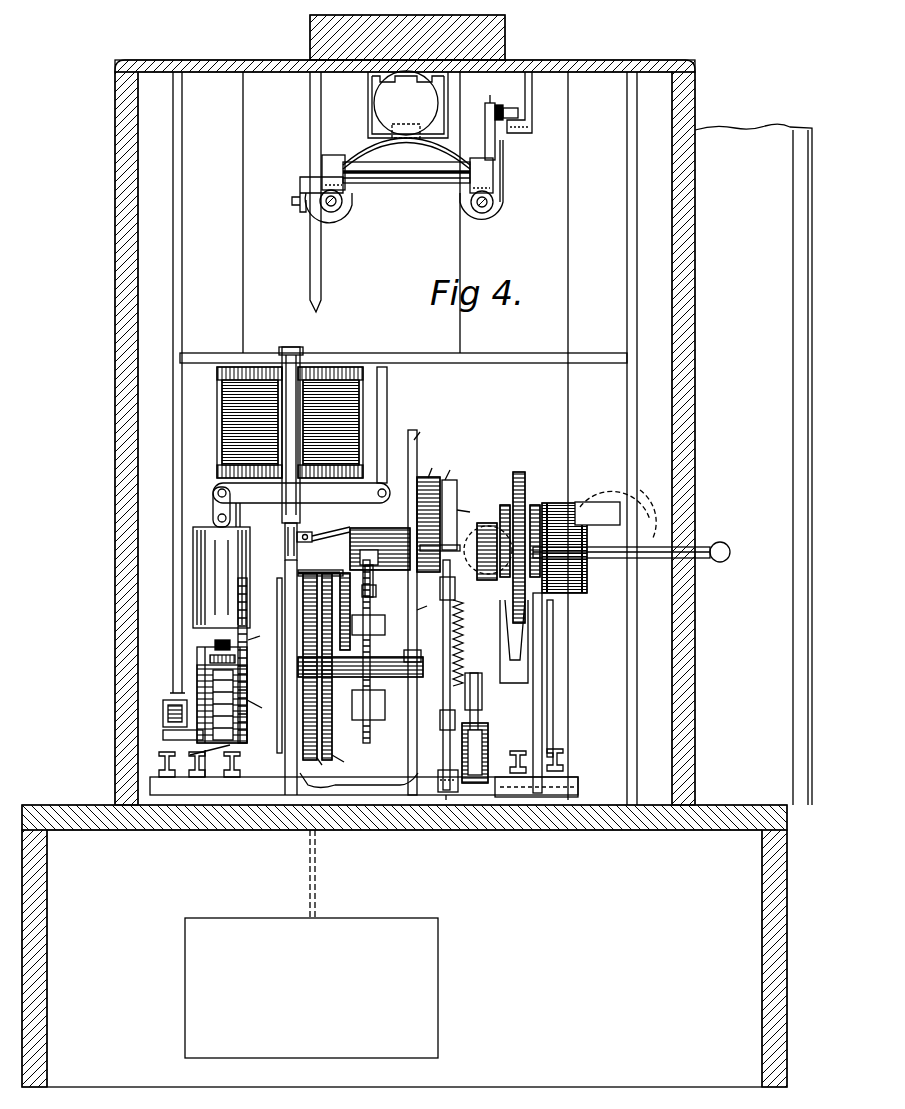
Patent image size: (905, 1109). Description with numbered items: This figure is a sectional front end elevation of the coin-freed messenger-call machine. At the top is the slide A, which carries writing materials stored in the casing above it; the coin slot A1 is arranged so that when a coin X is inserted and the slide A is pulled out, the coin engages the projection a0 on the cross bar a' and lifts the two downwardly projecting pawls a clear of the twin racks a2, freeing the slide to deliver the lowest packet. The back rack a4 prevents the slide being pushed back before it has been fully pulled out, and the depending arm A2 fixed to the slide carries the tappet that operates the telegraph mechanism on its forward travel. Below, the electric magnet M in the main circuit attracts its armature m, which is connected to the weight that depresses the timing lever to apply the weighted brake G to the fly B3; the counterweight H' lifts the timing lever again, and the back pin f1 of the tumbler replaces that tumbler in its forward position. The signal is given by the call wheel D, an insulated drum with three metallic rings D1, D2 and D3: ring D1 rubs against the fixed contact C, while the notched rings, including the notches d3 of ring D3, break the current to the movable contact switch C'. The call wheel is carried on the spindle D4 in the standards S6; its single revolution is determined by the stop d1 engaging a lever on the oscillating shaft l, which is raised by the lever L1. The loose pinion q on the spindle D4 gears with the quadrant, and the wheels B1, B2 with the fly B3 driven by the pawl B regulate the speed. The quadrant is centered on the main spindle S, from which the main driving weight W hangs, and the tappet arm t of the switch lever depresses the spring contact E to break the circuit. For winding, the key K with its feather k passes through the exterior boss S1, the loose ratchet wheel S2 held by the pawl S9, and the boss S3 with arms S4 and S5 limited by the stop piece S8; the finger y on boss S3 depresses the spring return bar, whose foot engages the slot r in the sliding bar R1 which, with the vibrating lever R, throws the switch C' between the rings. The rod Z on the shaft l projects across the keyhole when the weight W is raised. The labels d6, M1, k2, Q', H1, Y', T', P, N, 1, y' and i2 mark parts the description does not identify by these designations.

The slide A is at (407, 37).
The coin slot A1 is at (450, 37).
The depending arm A2 is at (327, 192).
The coin X is at (408, 104).
The projection a0 is at (406, 131).
The cross bar a' is at (406, 160).
The pawls a is at (407, 174).
The twin racks a2 is at (342, 203).
The notches d3 is at (480, 127).
The screw d6 is at (506, 108).
The back rack a4 is at (520, 133).
The electric magnet M is at (217, 427).
The post M1 is at (411, 594).
The back pin of tumbler f1 is at (422, 428).
The armature m is at (301, 493).
The cylinder k2 is at (221, 577).
The counter weight H' is at (283, 543).
The arm Q' is at (331, 542).
The main spindle S is at (380, 549).
The weighted brake G is at (377, 576).
The laterally projecting arm S4 is at (447, 524).
The stop piece S8 is at (432, 466).
The laterally projecting arm S5 is at (455, 466).
The finger y is at (450, 560).
The feather k is at (488, 534).
The boss S3 is at (492, 580).
The loose ratchet wheel S2 is at (529, 547).
The standards S6 is at (528, 652).
The exterior boss S1 is at (578, 548).
The box H1 is at (615, 515).
The key K is at (631, 542).
The rod Z is at (553, 690).
The pawl S9 is at (473, 643).
The vibrating lever R is at (350, 675).
The sliding contact bar R1 is at (441, 767).
The slot r is at (445, 805).
The bar Y' is at (426, 614).
The block T' is at (419, 645).
The tappet arm t is at (478, 712).
The spring contact E is at (482, 751).
The foot P is at (517, 752).
The foot N is at (560, 752).
The pawl B is at (341, 666).
The shaft 1 is at (318, 615).
The lever L1 is at (360, 699).
The loose pinion q is at (361, 705).
The fly B3 is at (370, 612).
The wheel of train B1 is at (320, 768).
The wheel of train B2 is at (346, 762).
The oscillating shaft l is at (359, 777).
The call wheel D is at (205, 640).
The plain ring D1 is at (200, 692).
The spindle D4 is at (255, 660).
The notched ring D2 is at (261, 713).
The notched ring D3 is at (210, 761).
The lever y' is at (258, 637).
The block i2 is at (163, 712).
The stop d1 is at (163, 737).
The fixed contact C is at (173, 775).
The movable contact switch C' is at (221, 775).
The main driving weight W is at (311, 944).